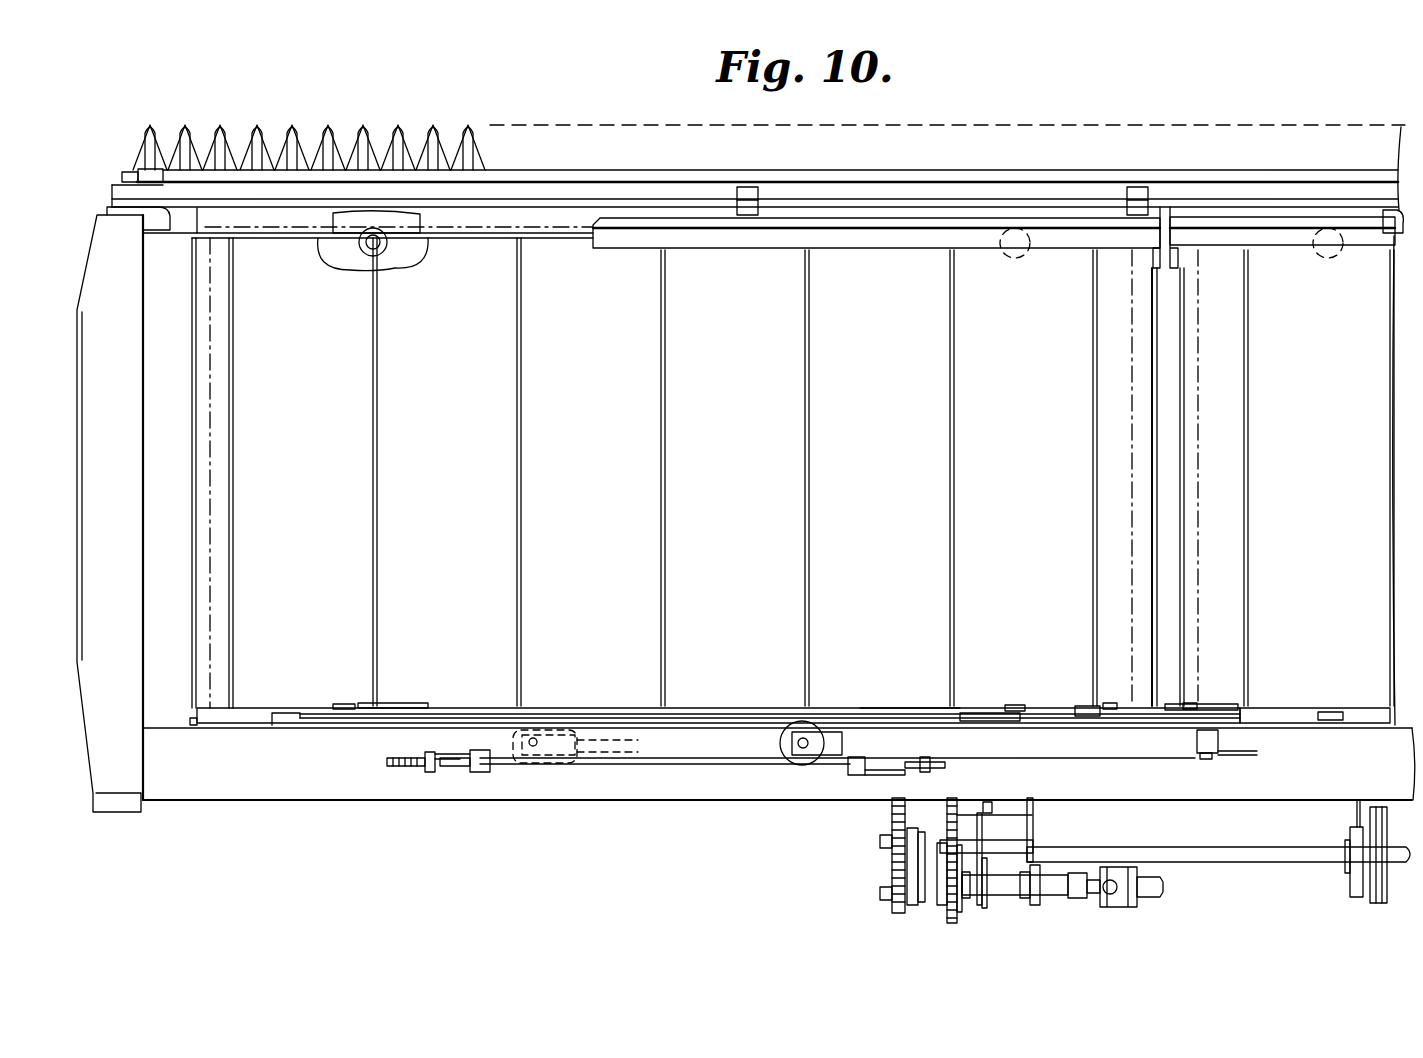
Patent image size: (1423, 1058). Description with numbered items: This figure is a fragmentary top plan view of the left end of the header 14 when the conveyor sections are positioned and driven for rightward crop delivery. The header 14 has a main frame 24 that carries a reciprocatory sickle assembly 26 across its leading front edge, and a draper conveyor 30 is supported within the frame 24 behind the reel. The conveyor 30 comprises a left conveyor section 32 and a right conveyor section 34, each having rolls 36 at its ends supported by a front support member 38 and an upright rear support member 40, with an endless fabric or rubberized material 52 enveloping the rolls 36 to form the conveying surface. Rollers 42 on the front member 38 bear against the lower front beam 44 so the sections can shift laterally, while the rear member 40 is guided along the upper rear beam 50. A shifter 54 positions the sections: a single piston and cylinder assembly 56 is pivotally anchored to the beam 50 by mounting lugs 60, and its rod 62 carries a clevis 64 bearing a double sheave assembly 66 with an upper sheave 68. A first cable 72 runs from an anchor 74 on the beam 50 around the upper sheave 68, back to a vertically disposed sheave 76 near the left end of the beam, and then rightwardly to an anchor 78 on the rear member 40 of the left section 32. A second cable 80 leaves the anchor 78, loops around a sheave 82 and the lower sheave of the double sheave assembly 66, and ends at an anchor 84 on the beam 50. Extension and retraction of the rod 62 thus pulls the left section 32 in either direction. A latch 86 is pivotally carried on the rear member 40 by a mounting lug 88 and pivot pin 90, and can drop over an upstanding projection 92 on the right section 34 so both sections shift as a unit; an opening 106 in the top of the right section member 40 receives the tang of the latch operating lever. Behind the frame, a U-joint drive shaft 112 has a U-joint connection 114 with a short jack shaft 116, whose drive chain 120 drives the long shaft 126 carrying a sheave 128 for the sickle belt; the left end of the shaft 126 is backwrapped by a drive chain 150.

The header 14 is at (283, 838).
The main frame 24 is at (128, 820).
The reciprocatory sickle assembly 26 is at (293, 133).
The conveyor 30 is at (928, 218).
The left conveyor section 32 is at (192, 410).
The right conveyor section 34 is at (1390, 362).
The rolls 36 is at (205, 240).
The front support member 38 is at (312, 230).
The rear support member 40 is at (245, 710).
The rollers 42 is at (380, 252).
The lower front beam 44 is at (560, 205).
The upper rear beam 50 is at (575, 795).
The endless fabric or rubberized material 52 is at (248, 534).
The shifter 54 is at (909, 706).
The piston and cylinder assembly 56 is at (1038, 766).
The mounting lugs 60 is at (1245, 762).
The rod 62 is at (625, 745).
The clevis 64 is at (568, 713).
The double sheave assembly 66 is at (505, 745).
The upper sheave 68 is at (803, 758).
The first cable 72 is at (673, 766).
The anchor 74 is at (466, 780).
The vertically disposed sheave 76 is at (346, 712).
The anchor 78 is at (410, 708).
The second cable 80 is at (958, 716).
The sheave 82 is at (990, 710).
The anchor 84 is at (880, 776).
The latch 86 is at (1223, 704).
The mounting lug 88 is at (1078, 706).
The pivot pin 90 is at (1106, 703).
The upstanding projection 92 is at (1190, 710).
The opening 106 is at (1335, 712).
The U-joint drive shaft 112 is at (1160, 888).
The U-joint connection 114 is at (1102, 905).
The jack shaft 116 is at (1010, 897).
The drive chain 120 is at (945, 915).
The long shaft 126 is at (1237, 855).
The sheave 128 is at (1372, 902).
The drive chain 150 is at (880, 870).